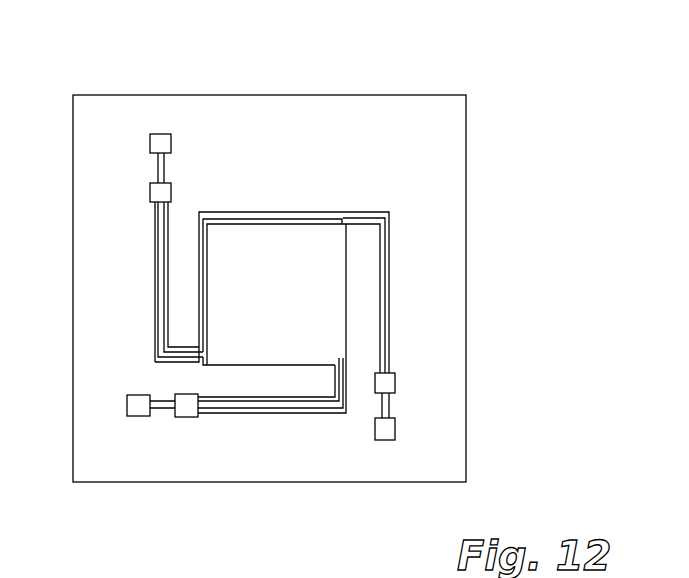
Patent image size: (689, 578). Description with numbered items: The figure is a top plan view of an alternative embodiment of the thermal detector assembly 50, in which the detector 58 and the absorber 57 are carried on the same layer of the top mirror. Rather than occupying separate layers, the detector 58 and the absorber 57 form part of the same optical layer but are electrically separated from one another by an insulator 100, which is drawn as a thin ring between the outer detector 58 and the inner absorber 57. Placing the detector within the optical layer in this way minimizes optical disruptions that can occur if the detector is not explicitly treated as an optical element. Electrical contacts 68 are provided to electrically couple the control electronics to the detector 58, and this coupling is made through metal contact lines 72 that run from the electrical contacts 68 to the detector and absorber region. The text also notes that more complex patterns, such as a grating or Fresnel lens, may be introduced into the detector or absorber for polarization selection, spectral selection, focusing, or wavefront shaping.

The thermal detector assembly 50 is at (156, 70).
The absorber 57 is at (330, 314).
The detector 58 is at (258, 212).
The insulator 100 is at (312, 222).
The electrical contacts 68 is at (150, 148).
The metal contact lines 72 is at (150, 192).